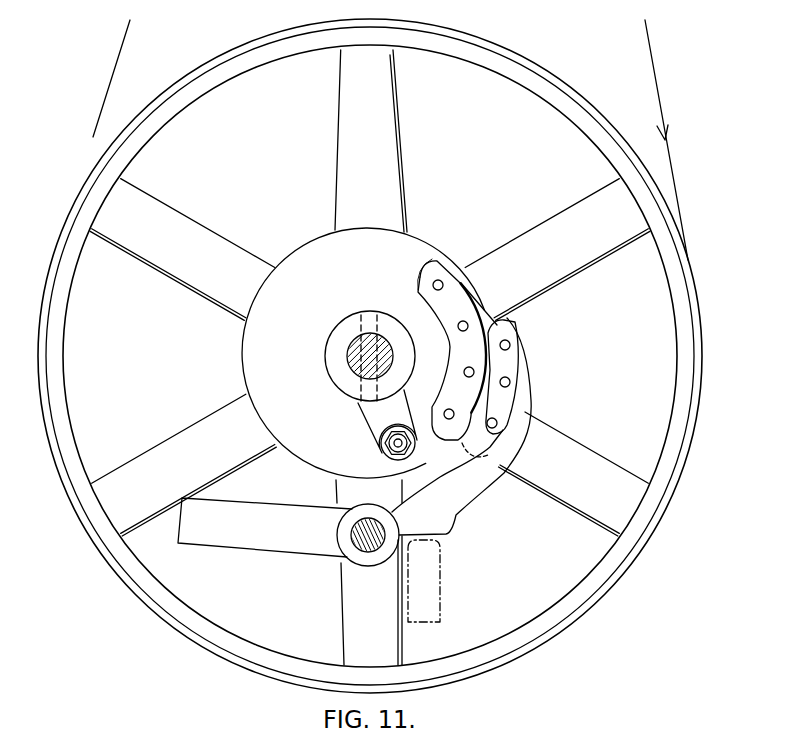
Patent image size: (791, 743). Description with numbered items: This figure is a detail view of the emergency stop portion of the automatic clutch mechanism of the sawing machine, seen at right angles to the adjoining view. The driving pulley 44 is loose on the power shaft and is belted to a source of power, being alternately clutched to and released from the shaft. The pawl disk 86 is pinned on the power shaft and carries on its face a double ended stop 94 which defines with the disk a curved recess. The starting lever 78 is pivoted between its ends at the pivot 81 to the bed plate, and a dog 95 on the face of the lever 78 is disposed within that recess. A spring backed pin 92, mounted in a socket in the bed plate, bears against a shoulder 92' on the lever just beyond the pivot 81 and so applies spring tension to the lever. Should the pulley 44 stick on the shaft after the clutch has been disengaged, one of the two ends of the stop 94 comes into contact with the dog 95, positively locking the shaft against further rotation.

The pulley 44 is at (229, 662).
The lever 78 is at (235, 535).
The pivot 81 is at (368, 553).
The pawl disk 86 is at (430, 240).
The spring backed pin 92 is at (444, 581).
The shoulder 92' is at (461, 434).
The double ended stop 94 is at (452, 362).
The dog 95 is at (505, 358).